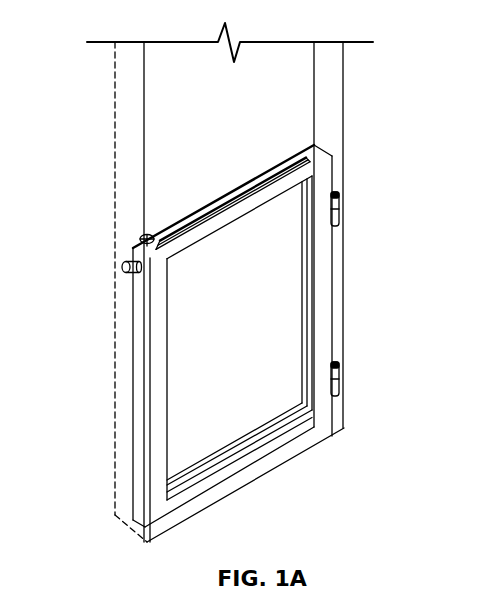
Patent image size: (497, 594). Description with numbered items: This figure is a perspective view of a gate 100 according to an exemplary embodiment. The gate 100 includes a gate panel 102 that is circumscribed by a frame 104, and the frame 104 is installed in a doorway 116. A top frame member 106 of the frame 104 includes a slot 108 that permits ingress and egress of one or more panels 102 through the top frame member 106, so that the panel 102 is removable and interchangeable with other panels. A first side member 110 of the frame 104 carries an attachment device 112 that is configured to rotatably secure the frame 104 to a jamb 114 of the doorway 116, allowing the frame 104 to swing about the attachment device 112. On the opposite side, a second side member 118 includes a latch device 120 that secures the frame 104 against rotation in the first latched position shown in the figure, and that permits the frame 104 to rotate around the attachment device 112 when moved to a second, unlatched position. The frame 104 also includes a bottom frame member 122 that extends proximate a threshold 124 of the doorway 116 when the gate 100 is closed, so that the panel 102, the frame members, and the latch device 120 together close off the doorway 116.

The gate 100 is at (254, 142).
The gate panel 102 is at (216, 430).
The frame 104 is at (158, 408).
The top frame member 106 is at (188, 249).
The slot 108 is at (226, 202).
The first side member 110 is at (322, 307).
The attachment device 112 is at (341, 209).
The jamb 114 is at (328, 87).
The doorway 116 is at (161, 53).
The second side member 118 is at (160, 322).
The latch device 120 is at (124, 266).
The bottom frame member 122 is at (197, 497).
The threshold 124 is at (297, 453).